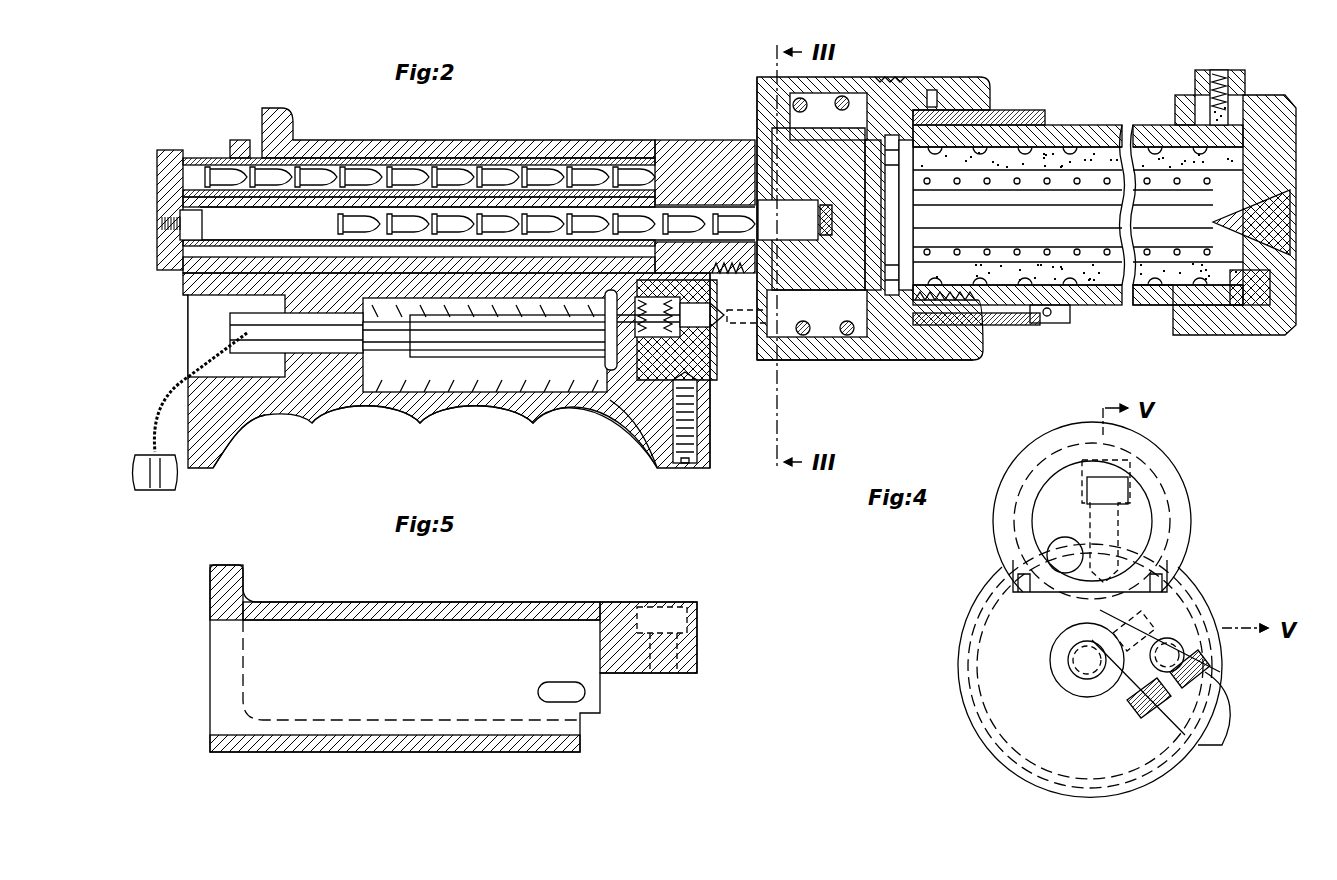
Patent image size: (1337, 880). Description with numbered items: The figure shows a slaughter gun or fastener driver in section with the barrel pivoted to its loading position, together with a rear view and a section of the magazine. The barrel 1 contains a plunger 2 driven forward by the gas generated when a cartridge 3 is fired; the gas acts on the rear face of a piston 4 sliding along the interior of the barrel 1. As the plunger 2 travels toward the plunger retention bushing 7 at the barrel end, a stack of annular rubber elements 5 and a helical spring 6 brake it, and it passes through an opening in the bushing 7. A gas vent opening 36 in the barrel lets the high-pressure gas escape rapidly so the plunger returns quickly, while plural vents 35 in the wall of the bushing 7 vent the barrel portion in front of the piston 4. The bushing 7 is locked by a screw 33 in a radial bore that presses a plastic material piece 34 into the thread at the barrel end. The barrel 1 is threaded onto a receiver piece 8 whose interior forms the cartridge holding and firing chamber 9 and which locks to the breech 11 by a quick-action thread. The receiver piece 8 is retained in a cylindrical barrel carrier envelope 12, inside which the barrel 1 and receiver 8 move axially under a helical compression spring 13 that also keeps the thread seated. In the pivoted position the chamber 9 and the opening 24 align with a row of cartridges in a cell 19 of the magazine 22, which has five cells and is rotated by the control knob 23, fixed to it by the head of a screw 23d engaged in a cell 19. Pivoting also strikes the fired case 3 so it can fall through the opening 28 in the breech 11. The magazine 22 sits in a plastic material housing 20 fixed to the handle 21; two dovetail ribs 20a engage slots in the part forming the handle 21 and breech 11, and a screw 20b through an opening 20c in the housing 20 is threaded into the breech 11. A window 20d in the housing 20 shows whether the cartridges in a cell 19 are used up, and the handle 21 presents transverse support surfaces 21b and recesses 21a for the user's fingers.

In FIG. 2, the barrel 1 is at (1043, 128).
In FIG. 2, the plunger 2 is at (1080, 205).
In FIG. 2, the cartridge 3 is at (752, 284).
In FIG. 2, the piston 4 is at (893, 150).
In FIG. 2, the annular rubber elements 5 is at (1088, 290).
In FIG. 2, the helical spring 6 is at (1160, 290).
In FIG. 2, the plunger retention bushing 7 is at (1290, 106).
In FIG. 2, the receiver piece 8 is at (860, 345).
In FIG. 2, the cartridge holding and firing chamber 9 is at (772, 132).
In FIG. 2, the breech 11 is at (690, 200).
In FIG. 2, the cylindrical barrel carrier envelope 12 is at (853, 80).
In FIG. 2, the helical compression spring 13 is at (803, 338).
In FIG. 2, the cell 19 is at (316, 215).
In FIG. 2, the plastic material housing 20 is at (522, 140).
In FIG. 4, the plastic material housing 20 is at (1180, 512).
In FIG. 5, the plastic material housing 20 is at (535, 616).
In FIG. 4, the dovetail ribs 20a is at (1013, 586).
In FIG. 4, the screw 20b is at (1120, 492).
In FIG. 5, the opening 20c is at (682, 606).
In FIG. 5, the window 20d is at (585, 700).
In FIG. 2, the handle 21 is at (366, 430).
In FIG. 2, the recesses 21a is at (407, 424).
In FIG. 2, the transverse support surfaces 21b is at (218, 462).
In FIG. 2, the magazine 22 is at (250, 196).
In FIG. 2, the control knob 23 is at (160, 175).
In FIG. 2, the screw 23d is at (190, 258).
In FIG. 2, the opening 24 is at (712, 205).
In FIG. 2, the opening 28 is at (735, 445).
In FIG. 2, the screw 33 is at (1226, 72).
In FIG. 2, the plastic material piece 34 is at (1175, 112).
In FIG. 2, the vents 35 is at (1242, 318).
In FIG. 2, the gas vent opening 36 is at (965, 112).